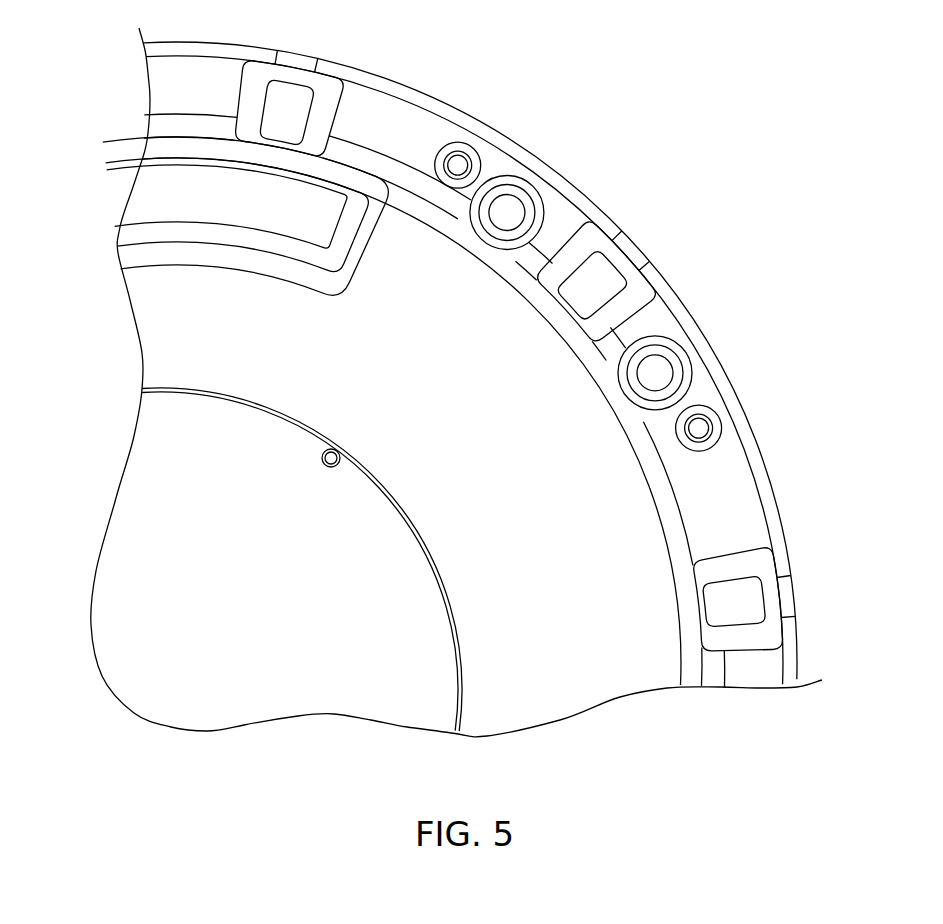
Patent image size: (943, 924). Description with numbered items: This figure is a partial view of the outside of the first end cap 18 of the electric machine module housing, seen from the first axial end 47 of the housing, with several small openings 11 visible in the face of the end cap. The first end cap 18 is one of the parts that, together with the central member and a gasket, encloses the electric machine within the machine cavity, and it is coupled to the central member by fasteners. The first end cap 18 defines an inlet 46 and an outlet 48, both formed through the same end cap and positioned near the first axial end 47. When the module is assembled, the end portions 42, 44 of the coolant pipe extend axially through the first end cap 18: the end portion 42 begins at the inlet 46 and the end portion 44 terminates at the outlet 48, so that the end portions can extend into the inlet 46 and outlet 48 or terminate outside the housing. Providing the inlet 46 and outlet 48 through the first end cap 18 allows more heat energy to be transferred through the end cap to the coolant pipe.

The fastener holes 11 is at (462, 161).
The first end cap 18 is at (560, 675).
The end portion 42 is at (519, 223).
The end portion 44 is at (667, 383).
The inlet 46 is at (521, 197).
The first axial end 47 is at (178, 327).
The outlet 48 is at (672, 362).